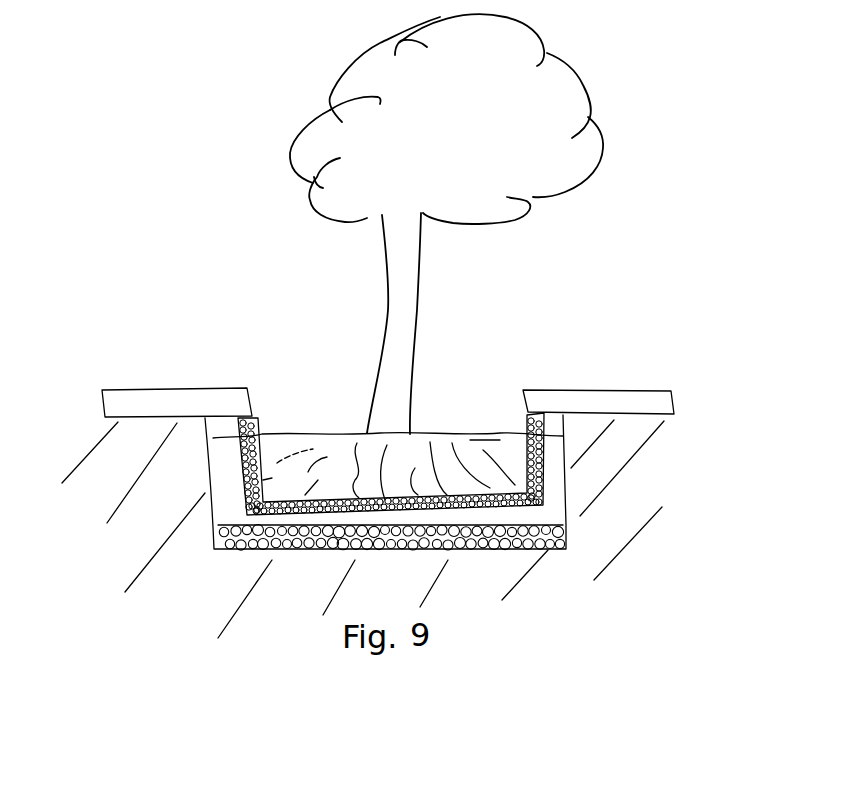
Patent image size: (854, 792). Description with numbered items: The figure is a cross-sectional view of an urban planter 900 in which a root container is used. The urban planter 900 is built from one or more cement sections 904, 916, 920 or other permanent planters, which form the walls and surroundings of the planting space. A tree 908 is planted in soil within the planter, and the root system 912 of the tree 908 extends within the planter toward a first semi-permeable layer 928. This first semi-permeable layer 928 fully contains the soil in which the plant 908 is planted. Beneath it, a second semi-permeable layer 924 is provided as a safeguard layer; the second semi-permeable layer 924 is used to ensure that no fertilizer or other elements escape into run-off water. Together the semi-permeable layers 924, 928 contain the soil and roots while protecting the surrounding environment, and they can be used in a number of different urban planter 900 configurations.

The urban planter 900 is at (680, 232).
The cement section 904 is at (561, 437).
The tree 908 is at (403, 303).
The root system 912 is at (450, 437).
The cement section 916 is at (150, 400).
The cement section 920 is at (140, 530).
The second semi-permeable layer 924 is at (213, 552).
The first semi-permeable layer 928 is at (545, 472).